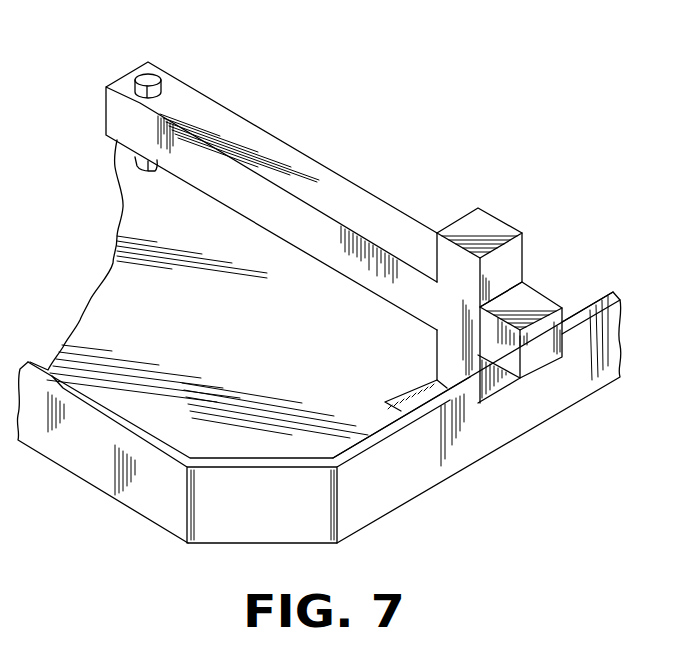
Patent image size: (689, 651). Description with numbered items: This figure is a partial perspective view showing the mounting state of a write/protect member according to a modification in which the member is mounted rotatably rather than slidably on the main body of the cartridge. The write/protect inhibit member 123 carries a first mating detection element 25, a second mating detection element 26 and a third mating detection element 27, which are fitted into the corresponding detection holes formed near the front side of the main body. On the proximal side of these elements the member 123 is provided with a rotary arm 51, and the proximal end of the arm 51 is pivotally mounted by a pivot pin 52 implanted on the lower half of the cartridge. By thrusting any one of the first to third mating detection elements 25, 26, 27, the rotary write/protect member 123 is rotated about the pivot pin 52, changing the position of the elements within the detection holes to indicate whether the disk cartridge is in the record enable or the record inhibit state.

The first mating detection element 25 is at (537, 355).
The rotary arm 51 is at (323, 190).
The pivot pin 52 is at (150, 78).
The write/protect inhibit member 123 is at (505, 265).
The second mating detection element 26 is at (483, 235).
The third mating detection element 27 is at (448, 348).